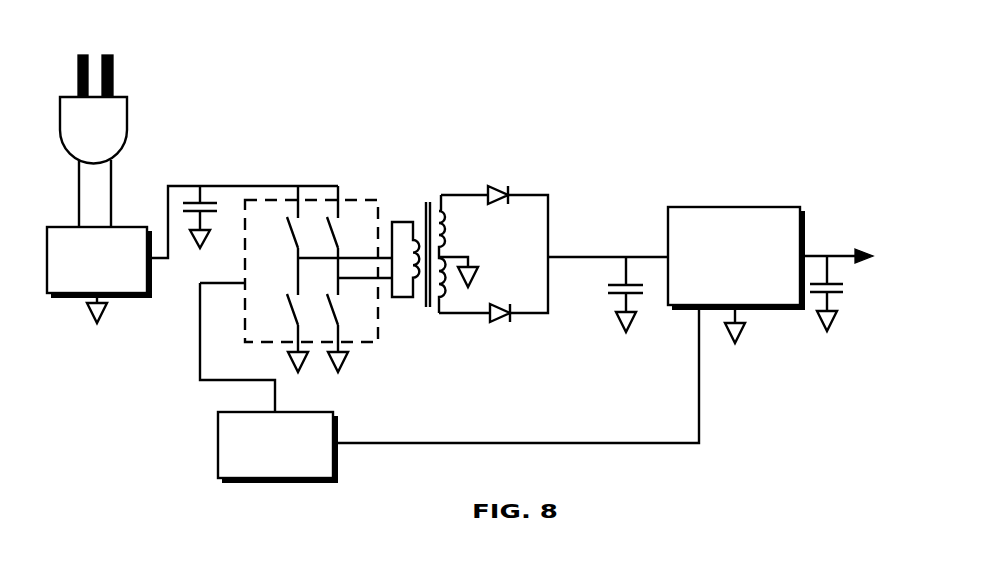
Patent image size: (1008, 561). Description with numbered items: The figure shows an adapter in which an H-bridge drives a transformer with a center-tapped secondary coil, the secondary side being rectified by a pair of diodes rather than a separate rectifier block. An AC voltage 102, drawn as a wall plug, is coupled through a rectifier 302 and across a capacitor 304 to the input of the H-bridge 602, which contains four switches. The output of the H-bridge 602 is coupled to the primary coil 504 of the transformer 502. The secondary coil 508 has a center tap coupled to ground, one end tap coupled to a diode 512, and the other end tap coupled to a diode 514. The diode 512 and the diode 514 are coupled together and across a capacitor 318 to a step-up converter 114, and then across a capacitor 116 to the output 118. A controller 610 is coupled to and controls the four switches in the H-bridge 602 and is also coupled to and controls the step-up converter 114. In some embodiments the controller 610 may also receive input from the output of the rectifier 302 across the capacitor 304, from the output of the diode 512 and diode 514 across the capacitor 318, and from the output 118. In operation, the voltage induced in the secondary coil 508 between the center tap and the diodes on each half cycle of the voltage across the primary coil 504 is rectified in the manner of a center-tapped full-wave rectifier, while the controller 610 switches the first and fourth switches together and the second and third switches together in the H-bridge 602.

The AC voltage 102 is at (133, 88).
The rectifier 302 is at (98, 275).
The capacitor 304 is at (185, 197).
The H-bridge 602 is at (372, 347).
The primary coil 504 is at (405, 213).
The transformer 502 is at (420, 200).
The secondary coil 508 is at (437, 180).
The diode 512 is at (510, 175).
The diode 514 is at (493, 332).
The capacitor 318 is at (602, 298).
The step-up converter 114 is at (735, 275).
The output 118 is at (858, 237).
The capacitor 116 is at (810, 303).
The controller 610 is at (277, 446).